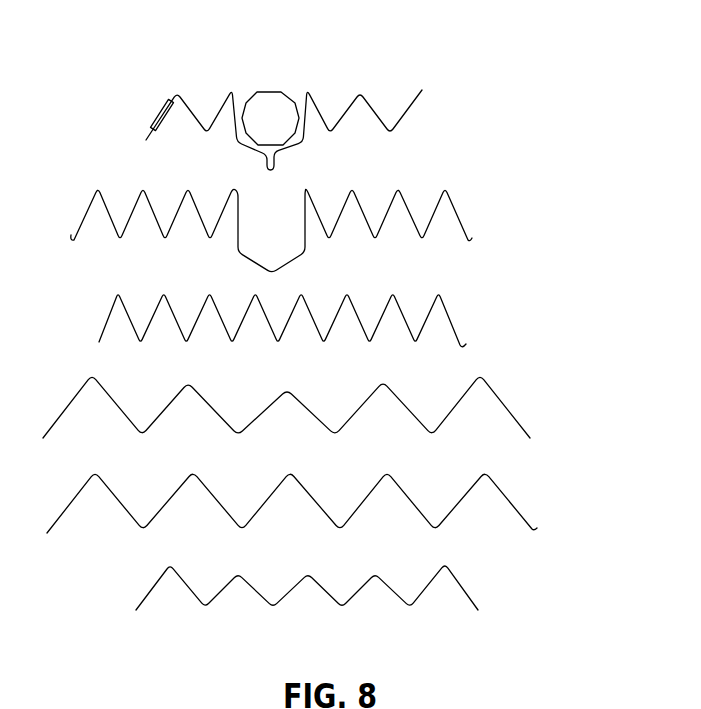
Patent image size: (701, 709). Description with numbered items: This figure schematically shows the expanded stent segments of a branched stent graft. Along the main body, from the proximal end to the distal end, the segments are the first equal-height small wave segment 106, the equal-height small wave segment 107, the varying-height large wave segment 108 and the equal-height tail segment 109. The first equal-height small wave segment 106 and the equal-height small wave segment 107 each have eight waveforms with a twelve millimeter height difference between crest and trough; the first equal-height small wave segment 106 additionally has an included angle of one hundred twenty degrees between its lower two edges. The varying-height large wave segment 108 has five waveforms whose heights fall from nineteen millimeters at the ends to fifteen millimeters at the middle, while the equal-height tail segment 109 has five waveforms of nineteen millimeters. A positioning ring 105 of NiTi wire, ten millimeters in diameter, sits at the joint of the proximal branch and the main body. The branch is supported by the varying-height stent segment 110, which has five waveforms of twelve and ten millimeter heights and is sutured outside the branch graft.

The positioning ring 105 is at (284, 92).
The first equal-height small wave segment 106 is at (422, 118).
The equal-height small wave segment 107 is at (473, 328).
The varying-height large wave segment 108 is at (525, 412).
The equal-height tail segment 109 is at (530, 512).
The varying-height stent segment 110 is at (507, 593).